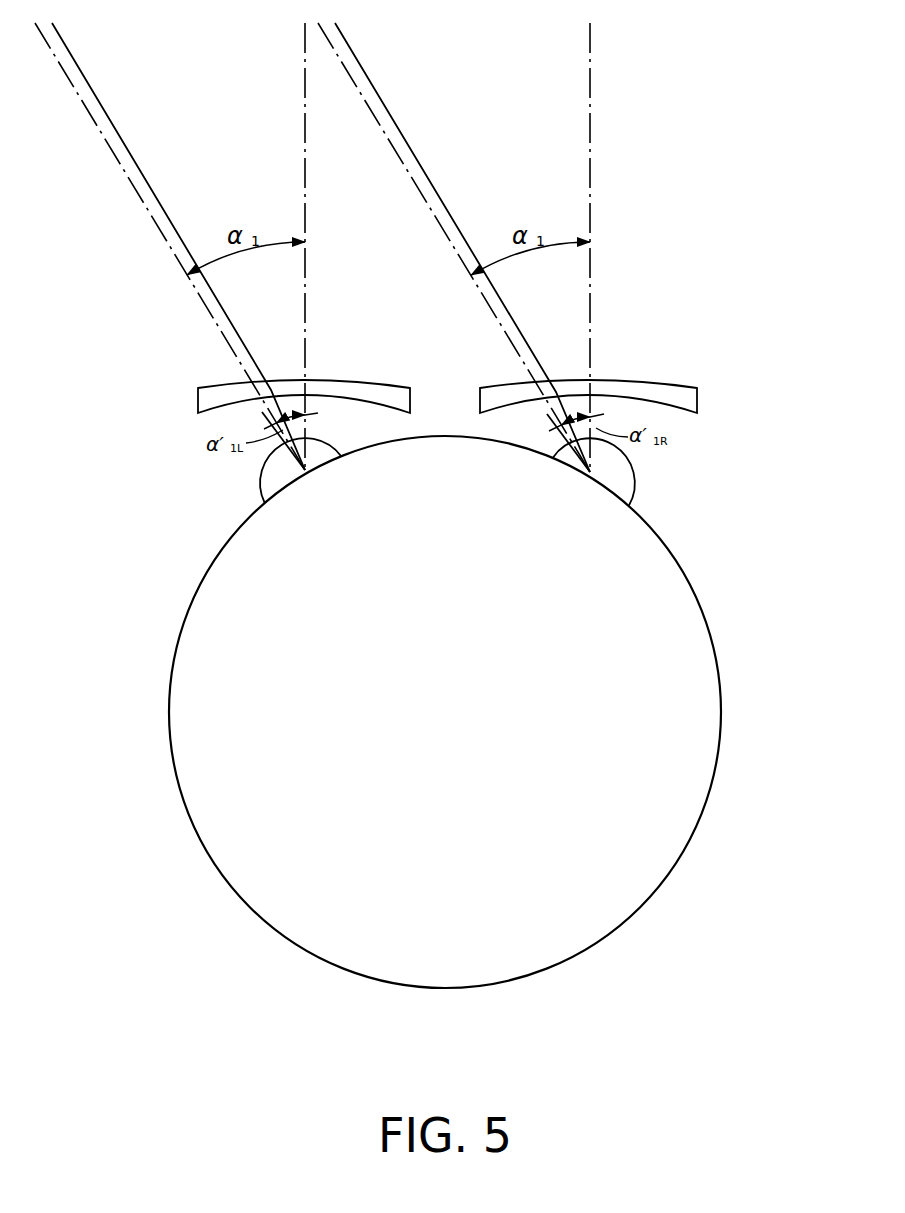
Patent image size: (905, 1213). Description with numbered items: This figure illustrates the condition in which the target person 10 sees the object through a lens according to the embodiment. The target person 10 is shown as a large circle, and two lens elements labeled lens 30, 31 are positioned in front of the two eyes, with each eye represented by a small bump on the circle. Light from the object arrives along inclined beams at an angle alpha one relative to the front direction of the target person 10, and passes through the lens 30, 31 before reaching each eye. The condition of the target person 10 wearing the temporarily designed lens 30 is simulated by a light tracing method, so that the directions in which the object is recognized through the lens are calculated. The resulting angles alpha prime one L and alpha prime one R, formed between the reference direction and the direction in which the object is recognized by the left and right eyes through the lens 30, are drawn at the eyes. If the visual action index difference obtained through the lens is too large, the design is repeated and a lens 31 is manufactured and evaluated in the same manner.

The target person 10 is at (722, 711).
The lens 30 is at (442, 379).
The lens 31 is at (212, 386).